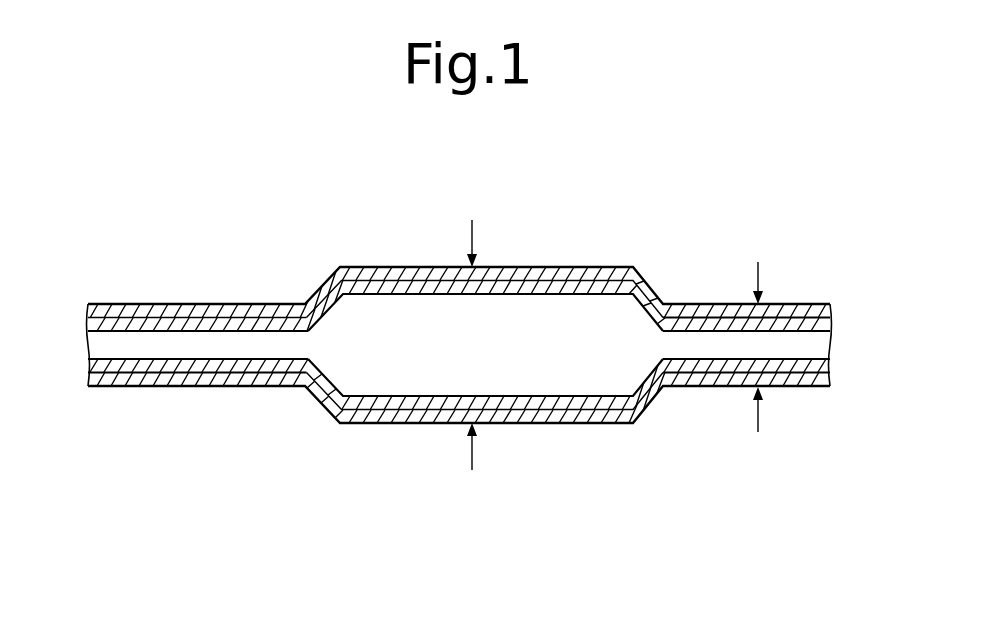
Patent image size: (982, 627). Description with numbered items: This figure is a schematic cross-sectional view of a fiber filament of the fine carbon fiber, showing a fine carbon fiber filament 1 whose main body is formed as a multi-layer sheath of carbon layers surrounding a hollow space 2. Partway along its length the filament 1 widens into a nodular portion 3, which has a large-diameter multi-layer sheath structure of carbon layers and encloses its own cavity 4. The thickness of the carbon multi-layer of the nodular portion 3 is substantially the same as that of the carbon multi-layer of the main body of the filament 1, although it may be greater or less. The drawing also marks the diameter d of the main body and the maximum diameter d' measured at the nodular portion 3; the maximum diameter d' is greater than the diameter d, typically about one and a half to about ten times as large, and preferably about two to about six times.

The fine carbon fiber filament 1 is at (201, 272).
The hollow space 2 is at (134, 340).
The nodular portion 3 is at (372, 238).
The cavity 4 is at (578, 312).
The diameter of the main body d is at (756, 333).
The maximum diameter at the nodular portion d' is at (474, 330).